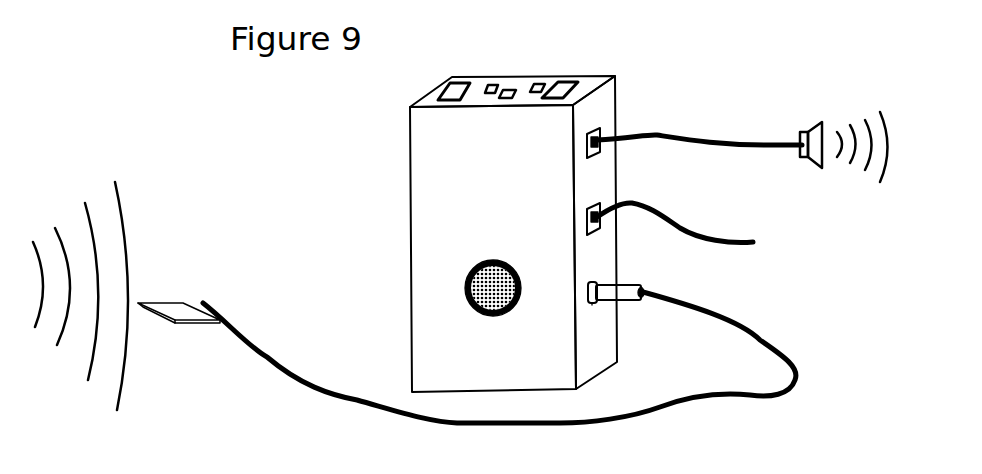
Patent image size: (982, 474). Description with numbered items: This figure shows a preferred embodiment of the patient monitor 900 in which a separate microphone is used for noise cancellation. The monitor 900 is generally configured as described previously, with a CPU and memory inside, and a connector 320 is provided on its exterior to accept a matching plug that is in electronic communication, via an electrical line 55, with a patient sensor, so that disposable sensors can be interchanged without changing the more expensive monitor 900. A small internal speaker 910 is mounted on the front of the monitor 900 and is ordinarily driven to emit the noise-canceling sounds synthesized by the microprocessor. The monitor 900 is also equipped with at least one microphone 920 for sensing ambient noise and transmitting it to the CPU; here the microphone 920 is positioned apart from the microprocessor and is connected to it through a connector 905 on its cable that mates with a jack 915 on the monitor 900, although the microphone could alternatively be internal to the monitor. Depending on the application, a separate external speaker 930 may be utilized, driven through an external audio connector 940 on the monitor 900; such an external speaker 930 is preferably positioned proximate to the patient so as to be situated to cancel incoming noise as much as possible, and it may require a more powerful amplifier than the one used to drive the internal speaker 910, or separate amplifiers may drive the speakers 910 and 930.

The patient monitor 900 is at (392, 188).
The internal speaker 910 is at (478, 257).
The microphone 920 is at (173, 298).
The connector 905 is at (622, 289).
The jack 915 is at (592, 305).
The external audio connector 940 is at (593, 130).
The connector 320 is at (593, 205).
The electrical line 55 is at (677, 218).
The external speaker 930 is at (822, 172).